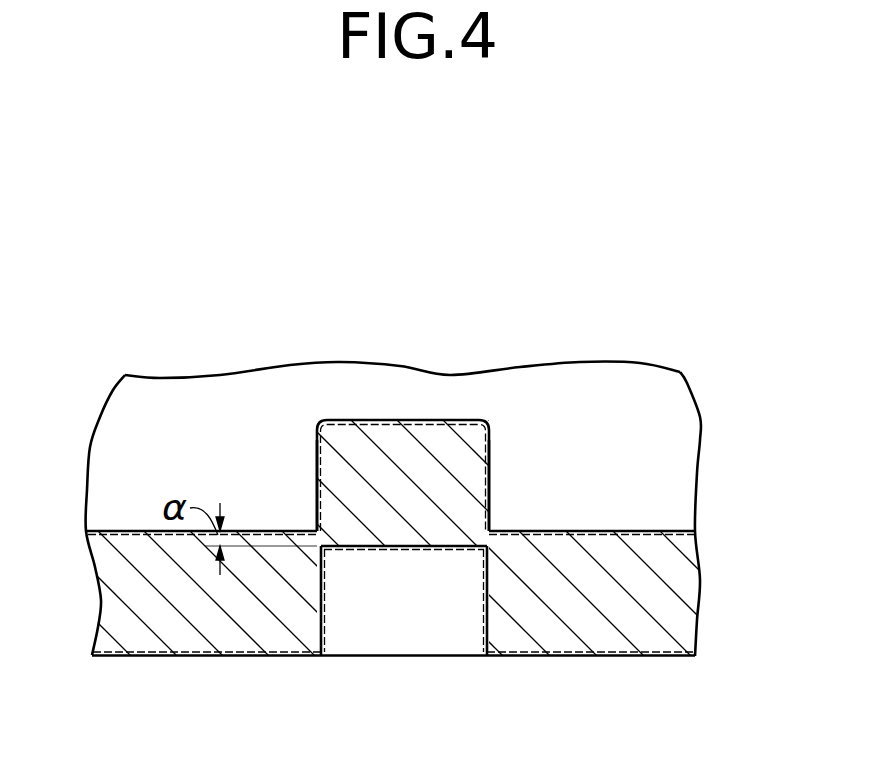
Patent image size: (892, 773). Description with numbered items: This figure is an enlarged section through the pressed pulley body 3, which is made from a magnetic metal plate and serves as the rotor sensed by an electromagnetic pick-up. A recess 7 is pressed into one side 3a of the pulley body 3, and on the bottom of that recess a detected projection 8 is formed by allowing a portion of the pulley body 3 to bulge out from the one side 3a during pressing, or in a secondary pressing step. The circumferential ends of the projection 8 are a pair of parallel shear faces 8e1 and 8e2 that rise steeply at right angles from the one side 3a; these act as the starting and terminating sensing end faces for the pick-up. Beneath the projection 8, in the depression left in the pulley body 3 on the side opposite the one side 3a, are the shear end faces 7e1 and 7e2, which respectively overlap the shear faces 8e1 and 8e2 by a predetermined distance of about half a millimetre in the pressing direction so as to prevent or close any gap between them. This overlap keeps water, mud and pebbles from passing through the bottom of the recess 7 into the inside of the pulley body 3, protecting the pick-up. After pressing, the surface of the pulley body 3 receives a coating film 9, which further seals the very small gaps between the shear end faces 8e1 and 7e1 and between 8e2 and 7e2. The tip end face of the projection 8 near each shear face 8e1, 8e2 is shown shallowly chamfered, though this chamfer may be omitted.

The pulley body 3 is at (699, 589).
The one side of the pulley body 3a is at (135, 530).
The recess 7 is at (662, 528).
The shear end face 7e1 is at (485, 613).
The shear end face 7e2 is at (321, 610).
The detected projection 8 is at (398, 418).
The shear face 8e1 is at (489, 473).
The shear face 8e2 is at (317, 475).
The coating film 9 is at (618, 530).